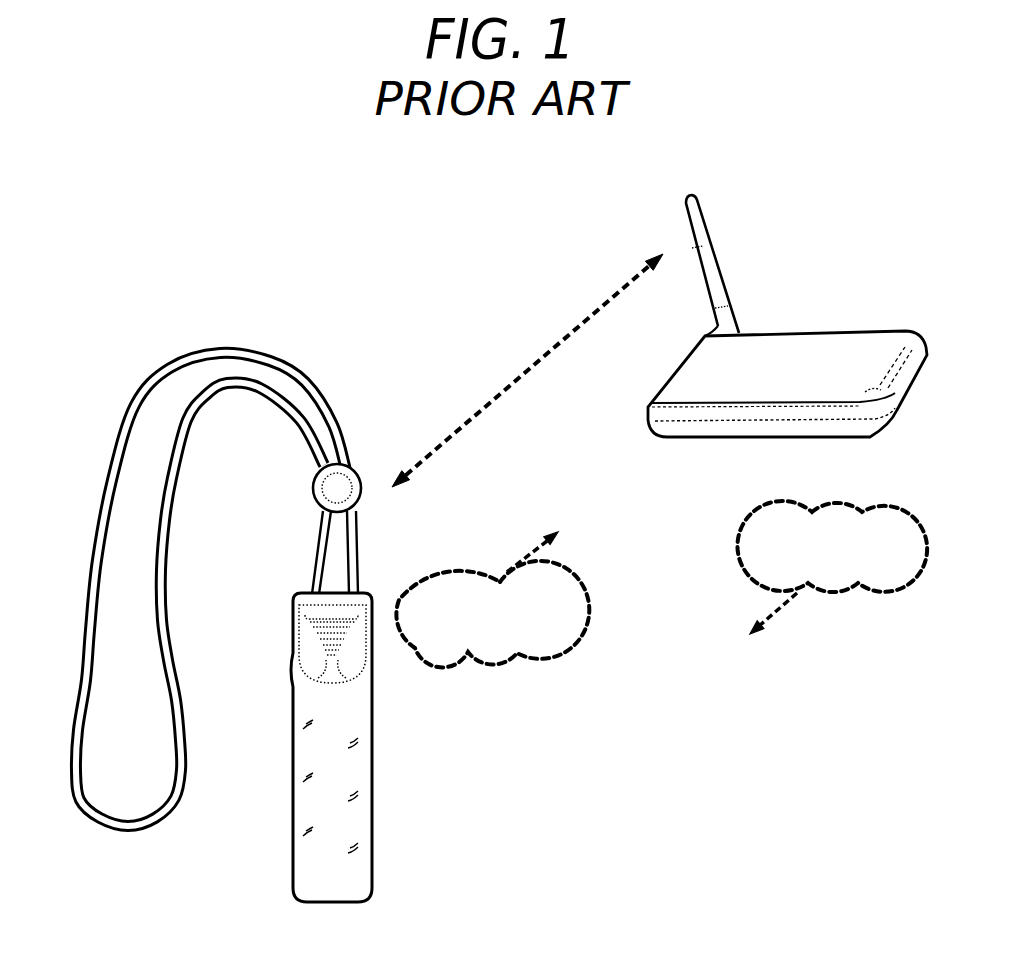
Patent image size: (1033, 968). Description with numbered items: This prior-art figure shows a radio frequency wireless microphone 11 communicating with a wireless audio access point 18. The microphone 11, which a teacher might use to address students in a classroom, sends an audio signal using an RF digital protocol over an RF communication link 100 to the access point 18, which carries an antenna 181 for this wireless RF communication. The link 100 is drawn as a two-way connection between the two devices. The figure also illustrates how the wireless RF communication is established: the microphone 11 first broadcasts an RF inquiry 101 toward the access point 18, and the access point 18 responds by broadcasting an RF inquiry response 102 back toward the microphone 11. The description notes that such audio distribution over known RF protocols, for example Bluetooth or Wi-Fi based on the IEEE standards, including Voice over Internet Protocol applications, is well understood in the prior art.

The radio frequency (RF) wireless microphone 11 is at (376, 799).
The wireless audio access point 18 is at (868, 330).
The antenna 181 is at (688, 204).
The RF communication link 100 is at (521, 379).
The RF inquiry 101 is at (556, 663).
The RF inquiry response 102 is at (766, 508).